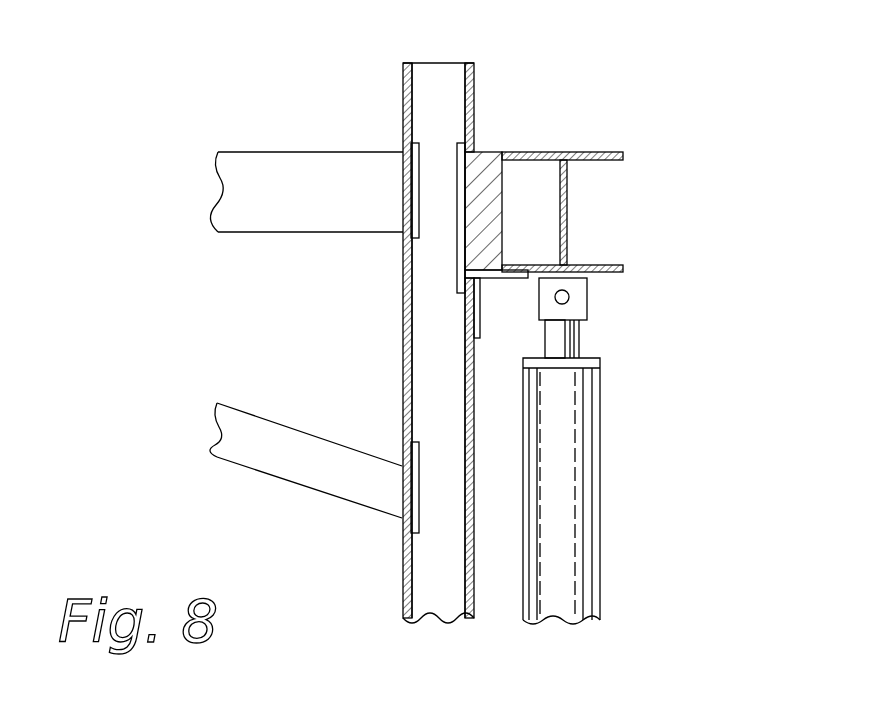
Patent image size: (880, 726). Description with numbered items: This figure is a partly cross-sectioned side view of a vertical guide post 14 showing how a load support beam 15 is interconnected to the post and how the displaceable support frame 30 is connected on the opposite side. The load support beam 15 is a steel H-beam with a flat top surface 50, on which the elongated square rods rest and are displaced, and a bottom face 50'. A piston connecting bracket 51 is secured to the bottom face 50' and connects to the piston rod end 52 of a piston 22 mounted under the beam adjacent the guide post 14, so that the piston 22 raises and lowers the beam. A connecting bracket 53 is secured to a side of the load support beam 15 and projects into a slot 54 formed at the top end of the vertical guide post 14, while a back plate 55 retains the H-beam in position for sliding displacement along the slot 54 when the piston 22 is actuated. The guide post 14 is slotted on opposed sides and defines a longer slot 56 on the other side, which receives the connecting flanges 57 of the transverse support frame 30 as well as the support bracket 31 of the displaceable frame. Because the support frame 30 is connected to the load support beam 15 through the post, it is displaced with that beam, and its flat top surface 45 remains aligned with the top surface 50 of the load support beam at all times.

The vertical guide post 14 is at (452, 316).
The slot 54 is at (470, 84).
The flat top surface 45 is at (298, 151).
The support frame 30 is at (282, 161).
The connecting brackets or flanges 57 is at (423, 160).
The back plate 55 is at (459, 255).
The connecting bracket 53 is at (487, 163).
The load support beam 15 is at (616, 181).
The flat top surface 50 is at (569, 170).
The bottom face 50' is at (616, 268).
The piston connecting bracket 51 is at (580, 298).
The piston rod end 52 is at (577, 343).
The piston 22 is at (573, 553).
The support bracket 31 is at (296, 448).
The longer slot 56 is at (402, 525).